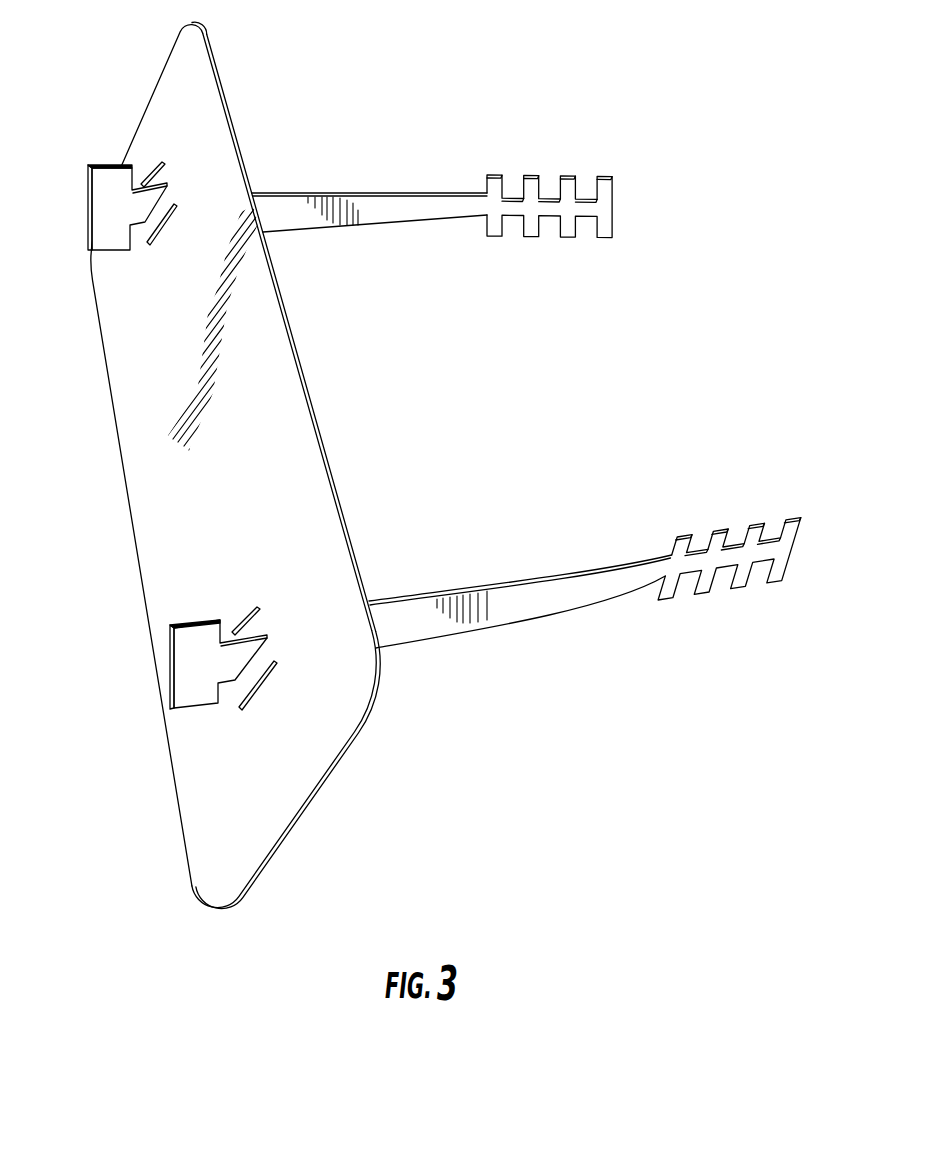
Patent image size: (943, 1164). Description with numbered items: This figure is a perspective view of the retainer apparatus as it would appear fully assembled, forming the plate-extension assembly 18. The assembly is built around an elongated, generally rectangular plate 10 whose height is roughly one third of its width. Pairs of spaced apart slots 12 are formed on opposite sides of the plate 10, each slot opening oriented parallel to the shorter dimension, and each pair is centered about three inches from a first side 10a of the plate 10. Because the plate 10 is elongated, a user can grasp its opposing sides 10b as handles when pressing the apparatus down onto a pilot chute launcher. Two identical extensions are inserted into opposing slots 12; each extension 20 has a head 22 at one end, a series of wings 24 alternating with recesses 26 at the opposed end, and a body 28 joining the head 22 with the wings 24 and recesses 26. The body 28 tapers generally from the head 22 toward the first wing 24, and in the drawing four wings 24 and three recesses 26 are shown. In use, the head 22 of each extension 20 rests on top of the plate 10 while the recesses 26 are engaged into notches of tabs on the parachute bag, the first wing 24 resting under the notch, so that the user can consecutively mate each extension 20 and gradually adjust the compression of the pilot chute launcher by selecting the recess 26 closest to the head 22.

The plate 10 is at (150, 435).
The first side 10a is at (305, 357).
The opposing sides 10b is at (318, 789).
The slots 12 is at (272, 665).
The plate-extension assembly 18 is at (542, 812).
The first extension 20 is at (326, 166).
The head 22 is at (190, 682).
The wings 24 is at (673, 540).
The recesses 26 is at (703, 541).
The body 28 is at (352, 200).